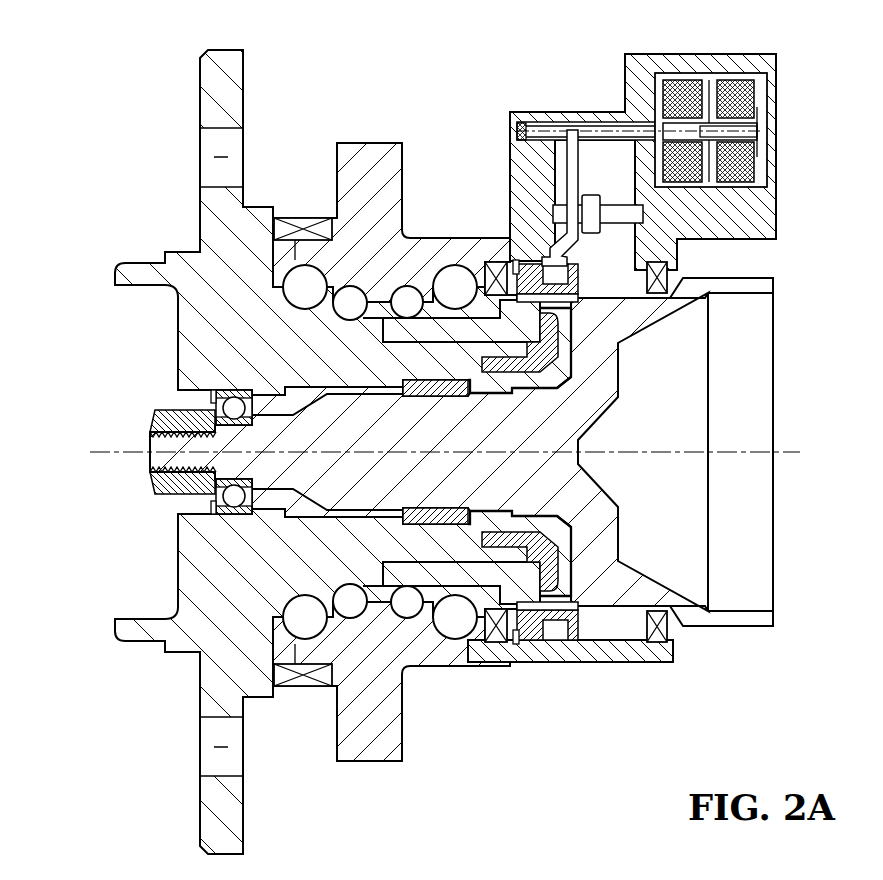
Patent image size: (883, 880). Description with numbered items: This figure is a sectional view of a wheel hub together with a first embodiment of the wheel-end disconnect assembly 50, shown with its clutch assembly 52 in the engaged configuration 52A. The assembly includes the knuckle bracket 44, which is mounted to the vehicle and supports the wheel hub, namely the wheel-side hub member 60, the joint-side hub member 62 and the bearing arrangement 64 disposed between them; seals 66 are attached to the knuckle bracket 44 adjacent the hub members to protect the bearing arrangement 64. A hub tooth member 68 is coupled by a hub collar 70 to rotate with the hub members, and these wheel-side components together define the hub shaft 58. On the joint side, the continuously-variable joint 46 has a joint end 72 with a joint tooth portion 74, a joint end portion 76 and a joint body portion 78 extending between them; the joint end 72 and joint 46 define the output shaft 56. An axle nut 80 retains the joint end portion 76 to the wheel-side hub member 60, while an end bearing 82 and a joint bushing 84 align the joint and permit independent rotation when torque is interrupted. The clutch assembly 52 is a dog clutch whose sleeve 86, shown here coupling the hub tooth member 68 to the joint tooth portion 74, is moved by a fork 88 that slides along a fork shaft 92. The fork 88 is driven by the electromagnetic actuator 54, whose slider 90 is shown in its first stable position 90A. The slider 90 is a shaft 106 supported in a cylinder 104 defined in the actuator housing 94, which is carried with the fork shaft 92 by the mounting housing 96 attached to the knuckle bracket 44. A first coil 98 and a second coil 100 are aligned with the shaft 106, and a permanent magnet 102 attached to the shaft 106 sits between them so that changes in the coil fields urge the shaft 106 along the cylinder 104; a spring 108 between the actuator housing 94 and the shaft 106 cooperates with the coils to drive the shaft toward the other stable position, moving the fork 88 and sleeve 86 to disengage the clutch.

The knuckle bracket 44 is at (383, 698).
The continuously-variable joint 46 is at (768, 486).
The wheel-end disconnect assembly 50 is at (602, 358).
The clutch assembly 52 is at (602, 358).
The engaged configuration 52A is at (536, 254).
The electromagnetic actuator 54 is at (758, 123).
The output shaft 56 is at (768, 486).
The hub shaft 58 is at (338, 452).
The wheel-side hub member 60 is at (183, 632).
The joint-side hub member 62 is at (445, 598).
The bearing arrangement 64 is at (378, 592).
The seals 66 is at (303, 230).
The hub tooth member 68 is at (551, 492).
The hub collar 70 is at (478, 358).
The joint end 72 is at (763, 628).
The joint tooth portion 74 is at (578, 308).
The joint end portion 76 is at (203, 456).
The joint body portion 78 is at (330, 490).
The axle nut 80 is at (165, 407).
The end bearing 82 is at (234, 396).
The joint bushing 84 is at (403, 381).
The sleeve 86 is at (543, 618).
The fork 88 is at (568, 268).
The slider 90 is at (639, 131).
The first stable position 90A is at (658, 132).
The fork shaft 92 is at (548, 212).
The actuator housing 94 is at (752, 77).
The mounting housing 96 is at (775, 71).
The first coil 98 is at (683, 177).
The second coil 100 is at (757, 100).
The permanent magnet 102 is at (710, 136).
The cylinder 104 is at (750, 128).
The shaft 106 is at (553, 130).
The spring 108 is at (522, 121).